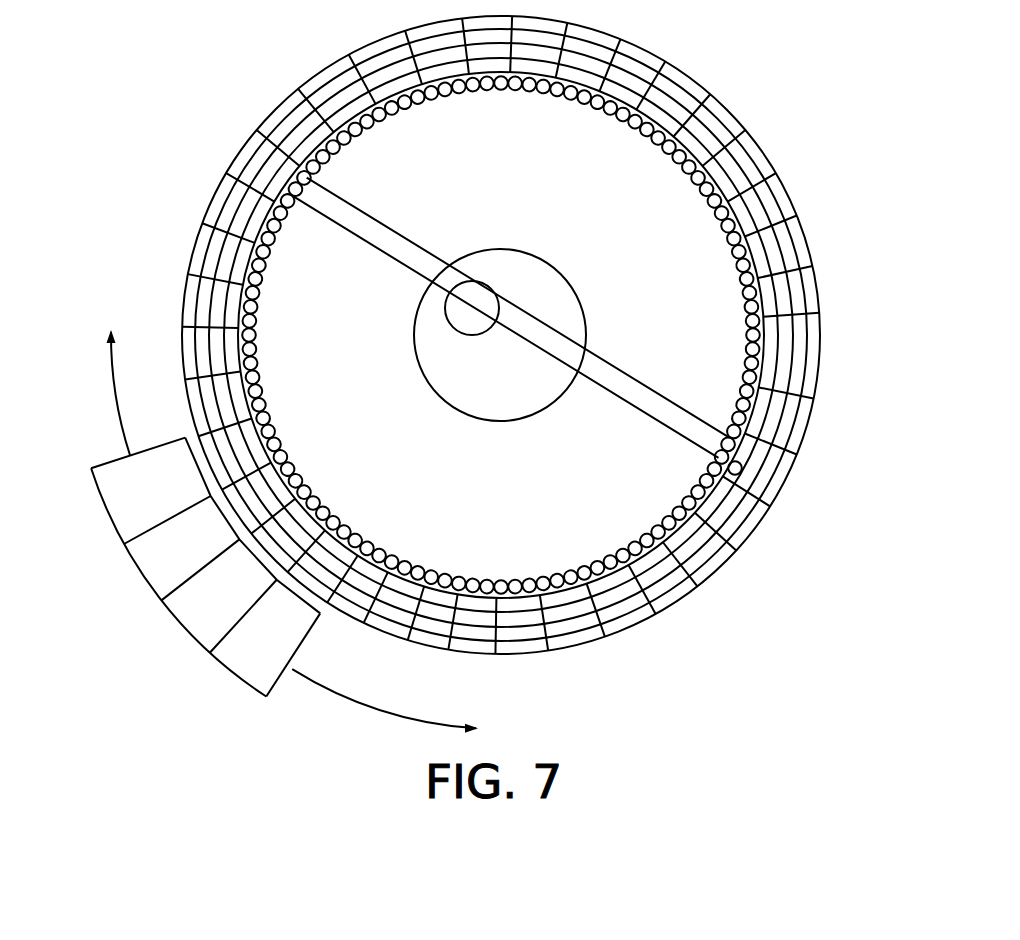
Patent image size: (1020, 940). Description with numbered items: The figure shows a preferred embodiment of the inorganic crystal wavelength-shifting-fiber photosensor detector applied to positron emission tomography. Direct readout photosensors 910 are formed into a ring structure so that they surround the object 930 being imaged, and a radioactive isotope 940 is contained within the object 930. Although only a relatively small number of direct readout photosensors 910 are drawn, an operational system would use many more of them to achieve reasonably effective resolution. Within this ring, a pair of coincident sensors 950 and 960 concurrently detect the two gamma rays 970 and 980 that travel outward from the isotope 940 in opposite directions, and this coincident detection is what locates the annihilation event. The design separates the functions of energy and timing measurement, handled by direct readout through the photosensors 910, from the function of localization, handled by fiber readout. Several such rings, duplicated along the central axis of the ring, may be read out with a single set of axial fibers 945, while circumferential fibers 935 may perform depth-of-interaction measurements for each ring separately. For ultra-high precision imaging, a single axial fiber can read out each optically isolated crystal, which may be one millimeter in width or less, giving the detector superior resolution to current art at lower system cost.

The direct readout photosensors 910 is at (128, 504).
The object 930 is at (512, 386).
The circumferential fibers 935 is at (666, 84).
The radioactive isotope 940 is at (458, 338).
The axial fibers 945 is at (693, 188).
The coincident sensor 950 is at (284, 128).
The coincident sensor 960 is at (740, 472).
The gamma ray 970 is at (350, 193).
The gamma ray 980 is at (657, 368).